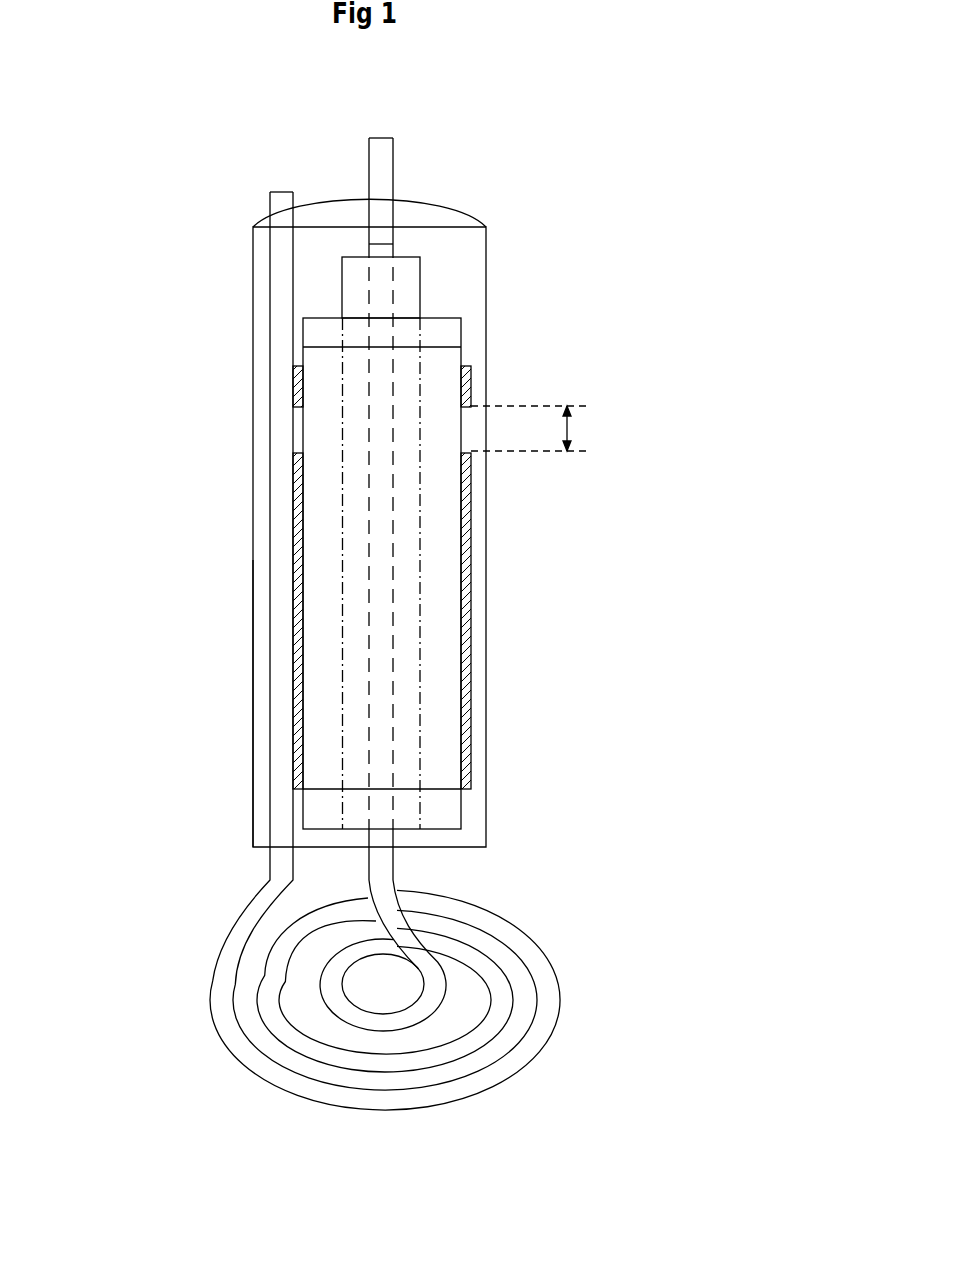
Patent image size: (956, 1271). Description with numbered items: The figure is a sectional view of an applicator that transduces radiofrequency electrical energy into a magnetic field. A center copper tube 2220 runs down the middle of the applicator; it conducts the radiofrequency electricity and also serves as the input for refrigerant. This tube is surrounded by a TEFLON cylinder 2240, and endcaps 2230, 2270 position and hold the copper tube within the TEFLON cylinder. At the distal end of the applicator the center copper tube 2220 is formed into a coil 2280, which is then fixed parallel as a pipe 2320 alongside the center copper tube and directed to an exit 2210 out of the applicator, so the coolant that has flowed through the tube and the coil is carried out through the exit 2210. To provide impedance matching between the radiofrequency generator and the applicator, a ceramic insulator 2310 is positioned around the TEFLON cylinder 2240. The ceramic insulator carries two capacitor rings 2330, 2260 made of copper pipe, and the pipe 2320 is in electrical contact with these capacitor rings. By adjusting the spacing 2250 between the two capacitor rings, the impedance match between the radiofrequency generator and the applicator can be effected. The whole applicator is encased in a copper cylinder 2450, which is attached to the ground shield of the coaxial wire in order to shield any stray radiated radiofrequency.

The exit 2210 is at (268, 187).
The center copper tube 2220 is at (385, 170).
The copper cylinder 2450 is at (252, 277).
The endcap 2230 is at (417, 247).
The TEFLON cylinder 2240 is at (410, 290).
The capacitor ring 2330 is at (297, 383).
The spacing 2250 is at (575, 427).
The pipe 2320 is at (278, 630).
The capacitor ring 2260 is at (467, 603).
The endcap 2270 is at (423, 773).
The ceramic insulator 2310 is at (323, 763).
The coil 2280 is at (533, 943).